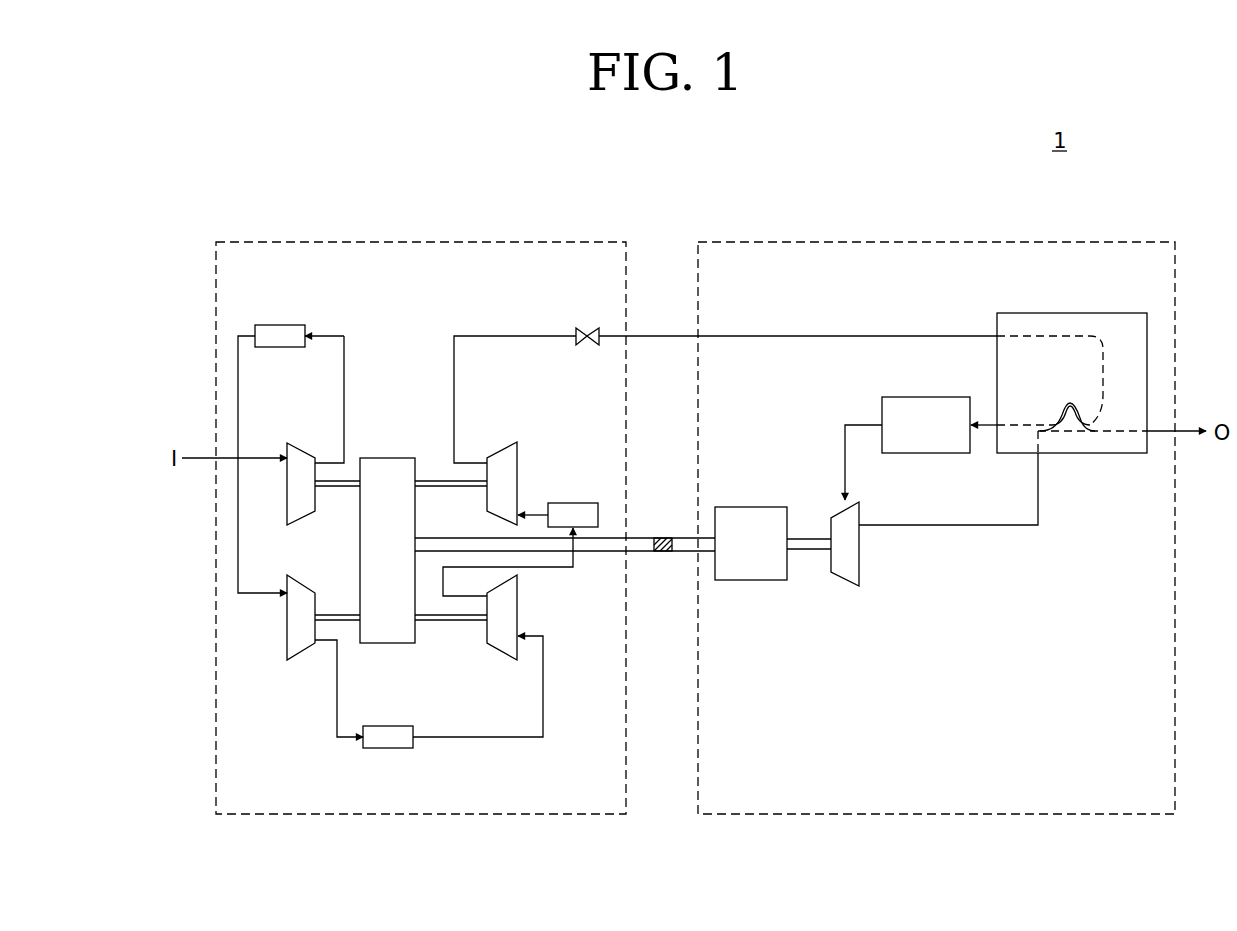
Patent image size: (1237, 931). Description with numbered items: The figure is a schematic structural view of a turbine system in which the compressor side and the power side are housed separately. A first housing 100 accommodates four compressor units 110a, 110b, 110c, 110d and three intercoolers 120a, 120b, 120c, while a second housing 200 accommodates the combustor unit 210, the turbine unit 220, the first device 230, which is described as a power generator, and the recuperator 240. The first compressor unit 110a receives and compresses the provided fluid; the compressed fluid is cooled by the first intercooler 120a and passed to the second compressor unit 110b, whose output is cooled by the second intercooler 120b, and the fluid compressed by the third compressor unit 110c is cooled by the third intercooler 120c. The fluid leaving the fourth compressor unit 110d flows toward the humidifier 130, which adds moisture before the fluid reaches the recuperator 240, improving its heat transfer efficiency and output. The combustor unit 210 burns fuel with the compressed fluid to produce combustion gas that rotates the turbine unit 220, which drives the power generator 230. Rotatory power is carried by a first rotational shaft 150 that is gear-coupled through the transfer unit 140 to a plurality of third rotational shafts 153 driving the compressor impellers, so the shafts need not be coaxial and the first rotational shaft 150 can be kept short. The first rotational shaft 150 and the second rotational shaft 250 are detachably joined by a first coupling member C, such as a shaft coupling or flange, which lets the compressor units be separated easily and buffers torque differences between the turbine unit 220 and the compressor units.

The first housing 100 is at (495, 240).
The second housing 200 is at (938, 240).
The first compressor unit 110a is at (302, 448).
The second compressor unit 110b is at (300, 652).
The third compressor unit 110c is at (500, 652).
The fourth compressor unit 110d is at (503, 448).
The first intercooler 120a is at (282, 325).
The second intercooler 120b is at (388, 752).
The third intercooler 120c is at (573, 502).
The humidifier 130 is at (587, 327).
The transfer unit 140 is at (386, 457).
The first rotational shaft 150 is at (603, 553).
The third rotational shafts 153 is at (464, 487).
The first coupling member C is at (661, 555).
The combustor unit 210 is at (925, 397).
The turbine unit 220 is at (846, 582).
The first device 230 is at (750, 582).
The recuperator 240 is at (1075, 313).
The second rotational shaft 250 is at (802, 552).